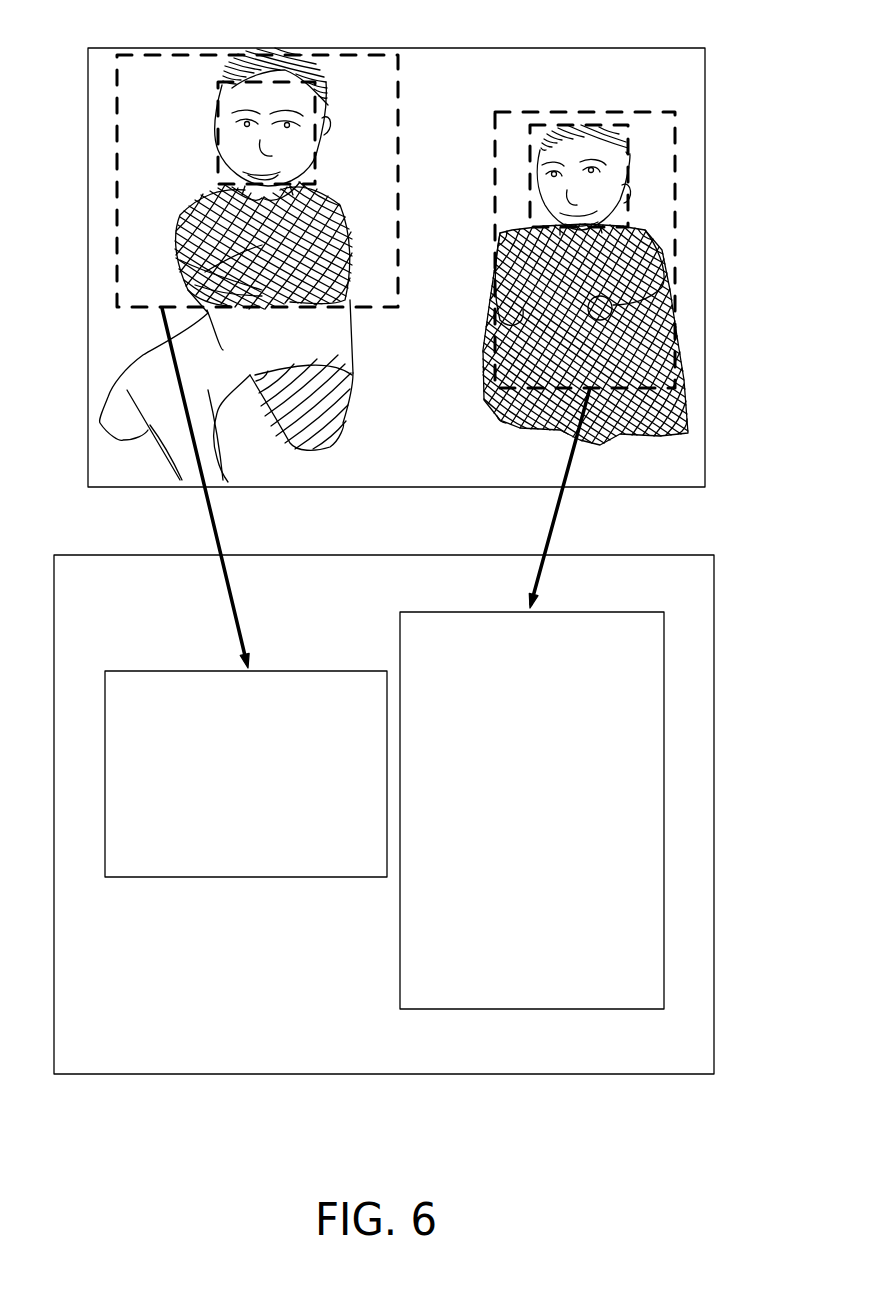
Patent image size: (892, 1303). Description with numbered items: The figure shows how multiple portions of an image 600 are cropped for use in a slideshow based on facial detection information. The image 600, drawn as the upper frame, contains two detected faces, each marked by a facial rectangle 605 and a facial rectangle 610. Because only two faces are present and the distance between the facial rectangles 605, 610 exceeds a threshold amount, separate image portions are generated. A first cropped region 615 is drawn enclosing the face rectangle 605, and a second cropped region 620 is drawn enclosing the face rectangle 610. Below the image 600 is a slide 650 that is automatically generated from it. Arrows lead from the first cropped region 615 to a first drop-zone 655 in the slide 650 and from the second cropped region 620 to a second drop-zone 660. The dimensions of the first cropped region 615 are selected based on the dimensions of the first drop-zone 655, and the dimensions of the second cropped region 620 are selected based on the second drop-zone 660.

The image 600 is at (705, 430).
The facial rectangle 605 is at (218, 158).
The facial rectangle 610 is at (598, 125).
The first cropped region 615 is at (115, 165).
The second cropped region 620 is at (672, 350).
The slide 650 is at (714, 633).
The first drop-zone 655 is at (212, 879).
The second drop-zone 660 is at (567, 1013).